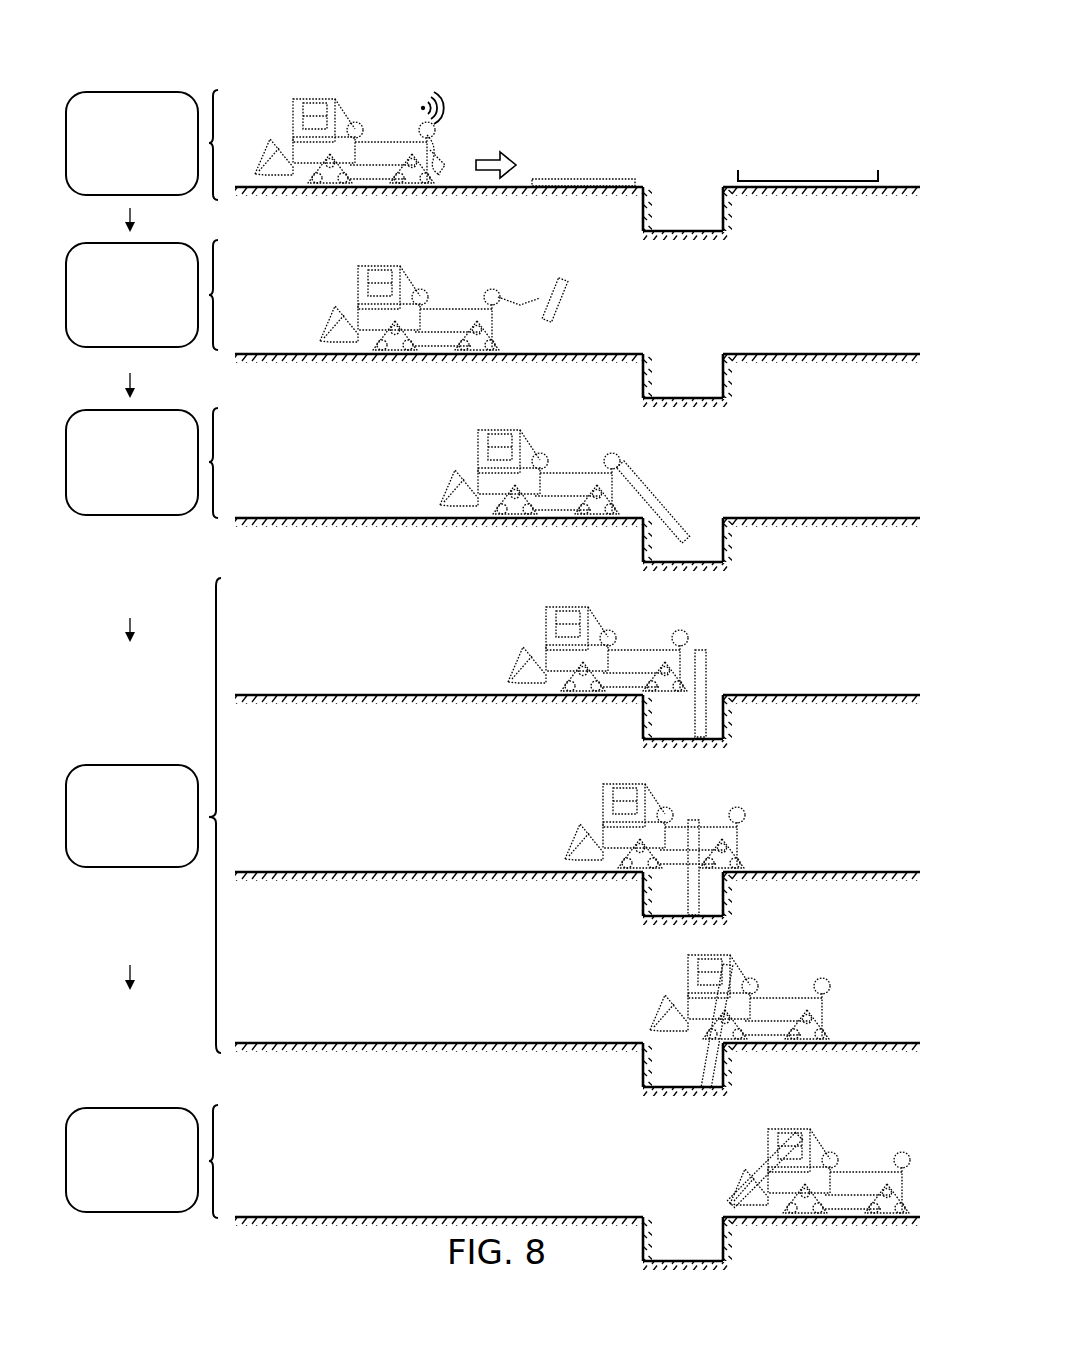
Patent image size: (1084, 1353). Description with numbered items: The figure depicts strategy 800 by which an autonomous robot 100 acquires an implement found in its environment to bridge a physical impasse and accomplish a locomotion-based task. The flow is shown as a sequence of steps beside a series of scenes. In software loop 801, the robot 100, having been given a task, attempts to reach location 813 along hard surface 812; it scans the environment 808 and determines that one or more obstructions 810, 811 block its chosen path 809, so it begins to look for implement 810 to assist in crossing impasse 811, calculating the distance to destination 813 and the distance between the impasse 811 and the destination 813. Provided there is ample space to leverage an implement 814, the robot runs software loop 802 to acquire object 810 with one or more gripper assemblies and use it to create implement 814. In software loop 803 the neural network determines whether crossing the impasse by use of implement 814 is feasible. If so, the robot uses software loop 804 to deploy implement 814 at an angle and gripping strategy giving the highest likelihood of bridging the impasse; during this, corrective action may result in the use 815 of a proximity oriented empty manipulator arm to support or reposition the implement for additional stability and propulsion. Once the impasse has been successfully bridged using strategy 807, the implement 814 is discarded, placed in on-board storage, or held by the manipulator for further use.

The strategy 800 is at (163, 54).
The software loop 801 is at (132, 143).
The software loop 802 is at (132, 295).
The software loop 803 is at (132, 462).
The software loop 804 is at (132, 816).
The strategy 807 is at (132, 1160).
The robot 100 is at (343, 90).
The environment 808 is at (434, 80).
The chosen path 809 is at (490, 140).
The implement 810 is at (596, 175).
The impasse 811 is at (686, 220).
The hard surface 812 is at (915, 185).
The location 813 is at (814, 175).
The implement 814 is at (531, 290).
The use of a proximity oriented empty manipulator arm 815 is at (693, 815).